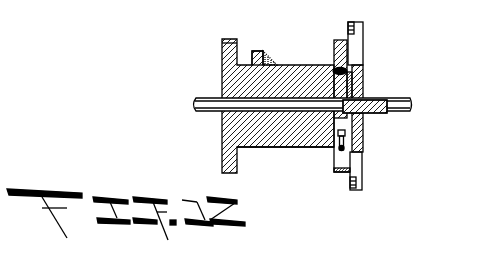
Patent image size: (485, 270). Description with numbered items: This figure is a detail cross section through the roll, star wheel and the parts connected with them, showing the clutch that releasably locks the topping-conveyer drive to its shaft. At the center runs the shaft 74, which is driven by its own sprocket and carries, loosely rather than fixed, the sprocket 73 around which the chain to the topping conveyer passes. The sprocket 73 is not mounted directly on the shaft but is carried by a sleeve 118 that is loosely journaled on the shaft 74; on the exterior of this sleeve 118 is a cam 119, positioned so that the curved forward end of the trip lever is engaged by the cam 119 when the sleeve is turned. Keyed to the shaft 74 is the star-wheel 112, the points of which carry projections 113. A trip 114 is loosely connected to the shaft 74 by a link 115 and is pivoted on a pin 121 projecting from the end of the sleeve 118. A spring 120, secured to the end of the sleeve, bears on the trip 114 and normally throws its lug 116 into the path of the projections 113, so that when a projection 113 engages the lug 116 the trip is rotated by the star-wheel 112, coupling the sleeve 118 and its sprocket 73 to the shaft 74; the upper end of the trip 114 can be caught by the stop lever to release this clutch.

The sprocket 73 is at (222, 52).
The shaft 74 is at (405, 114).
The star-wheel 112 is at (363, 150).
The projections 113 is at (348, 30).
The trip 114 is at (334, 69).
The link 115 is at (364, 87).
The lug 116 is at (338, 167).
The sleeve 118 is at (279, 141).
The cam 119 is at (263, 54).
The spring 120 is at (336, 141).
The pin 121 is at (353, 66).